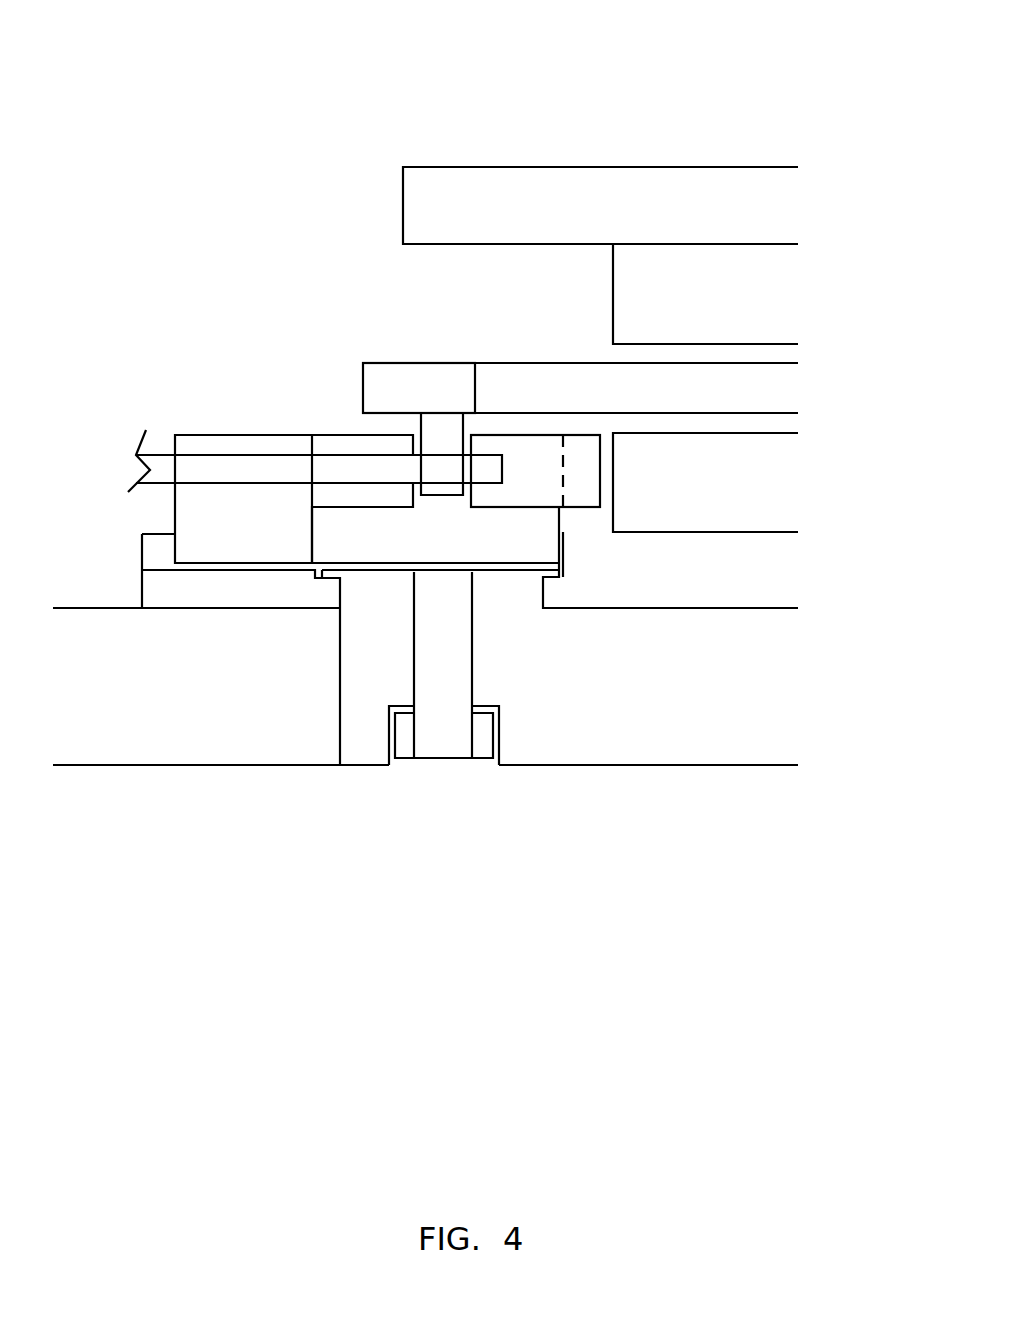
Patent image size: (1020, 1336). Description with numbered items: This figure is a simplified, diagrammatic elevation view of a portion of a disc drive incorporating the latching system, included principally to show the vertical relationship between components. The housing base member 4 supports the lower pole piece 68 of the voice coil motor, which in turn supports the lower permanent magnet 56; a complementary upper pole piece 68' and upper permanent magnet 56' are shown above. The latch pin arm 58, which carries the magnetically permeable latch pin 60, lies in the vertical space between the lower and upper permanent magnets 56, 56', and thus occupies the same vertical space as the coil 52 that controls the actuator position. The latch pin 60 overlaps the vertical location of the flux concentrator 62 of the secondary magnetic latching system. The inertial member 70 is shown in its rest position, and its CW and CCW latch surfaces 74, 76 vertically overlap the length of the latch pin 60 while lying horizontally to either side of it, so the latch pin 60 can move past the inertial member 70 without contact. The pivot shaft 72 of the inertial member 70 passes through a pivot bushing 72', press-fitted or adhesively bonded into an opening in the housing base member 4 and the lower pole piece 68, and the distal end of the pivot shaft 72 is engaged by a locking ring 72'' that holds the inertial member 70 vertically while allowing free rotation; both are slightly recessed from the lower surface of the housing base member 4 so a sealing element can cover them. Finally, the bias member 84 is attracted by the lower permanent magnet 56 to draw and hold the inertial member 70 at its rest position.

The upper pole piece 68' is at (569, 159).
The upper permanent magnet 56' is at (616, 187).
The coil 52 is at (722, 312).
The latch pin arm 58 is at (423, 387).
The latch pin 60 is at (442, 428).
The lower permanent magnet 56 is at (656, 519).
The flux concentrator 62 is at (198, 470).
The CCW latch surface 76 is at (355, 443).
The inertial member 70 is at (148, 511).
The CW latch surface 74 is at (543, 471).
The bias member 84 is at (585, 452).
The lower pole piece 68 is at (670, 597).
The pivot bushing 72' is at (351, 664).
The pivot shaft 72 is at (526, 665).
The locking ring 72'' is at (399, 803).
The housing base member 4 is at (233, 735).